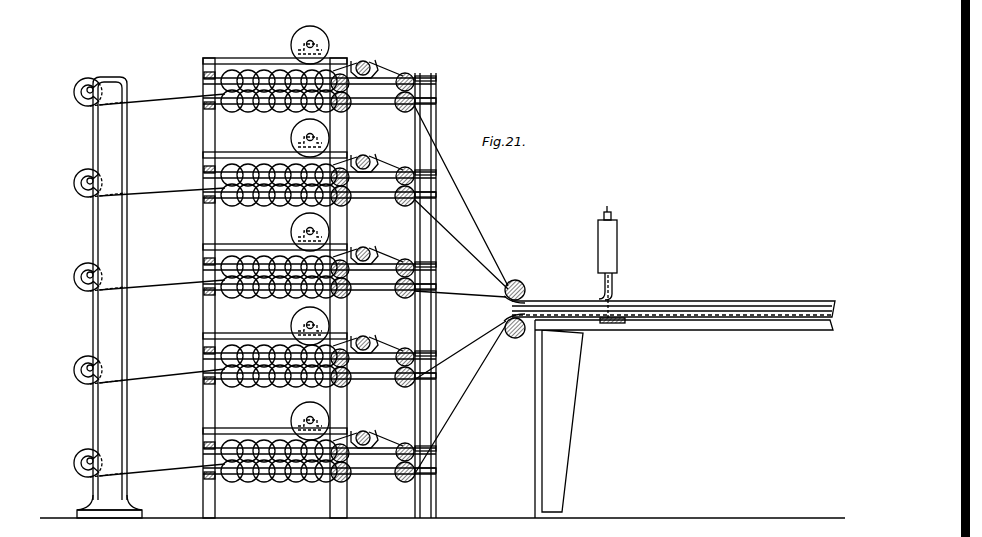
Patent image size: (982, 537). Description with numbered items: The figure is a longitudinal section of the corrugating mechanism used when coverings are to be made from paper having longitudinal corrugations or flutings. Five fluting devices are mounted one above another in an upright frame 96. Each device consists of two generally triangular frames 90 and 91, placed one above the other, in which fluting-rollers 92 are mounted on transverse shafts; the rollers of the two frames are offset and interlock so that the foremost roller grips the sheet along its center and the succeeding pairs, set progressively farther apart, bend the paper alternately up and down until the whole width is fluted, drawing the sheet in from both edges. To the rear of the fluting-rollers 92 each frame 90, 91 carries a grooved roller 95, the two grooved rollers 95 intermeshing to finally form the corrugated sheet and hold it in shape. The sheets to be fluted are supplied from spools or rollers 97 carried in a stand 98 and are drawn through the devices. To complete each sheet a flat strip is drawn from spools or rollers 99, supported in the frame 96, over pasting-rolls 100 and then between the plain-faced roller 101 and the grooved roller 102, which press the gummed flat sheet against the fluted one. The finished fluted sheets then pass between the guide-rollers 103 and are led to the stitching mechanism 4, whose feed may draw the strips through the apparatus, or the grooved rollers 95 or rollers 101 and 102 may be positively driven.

The stitching mechanism 4 is at (596, 240).
The frame 90 is at (256, 78).
The frame 91 is at (283, 275).
The fluting-rollers 92 is at (306, 111).
The grooved roller 95 is at (347, 103).
The upright frame 96 is at (204, 221).
The spools or rollers 97 is at (76, 99).
The stand 98 is at (122, 243).
The spools or rollers 99 is at (319, 38).
The pasting-rolls 100 is at (372, 63).
The plain-faced roller 101 is at (413, 79).
The grooved roller 102 is at (437, 96).
The guide-rollers 103 is at (520, 290).